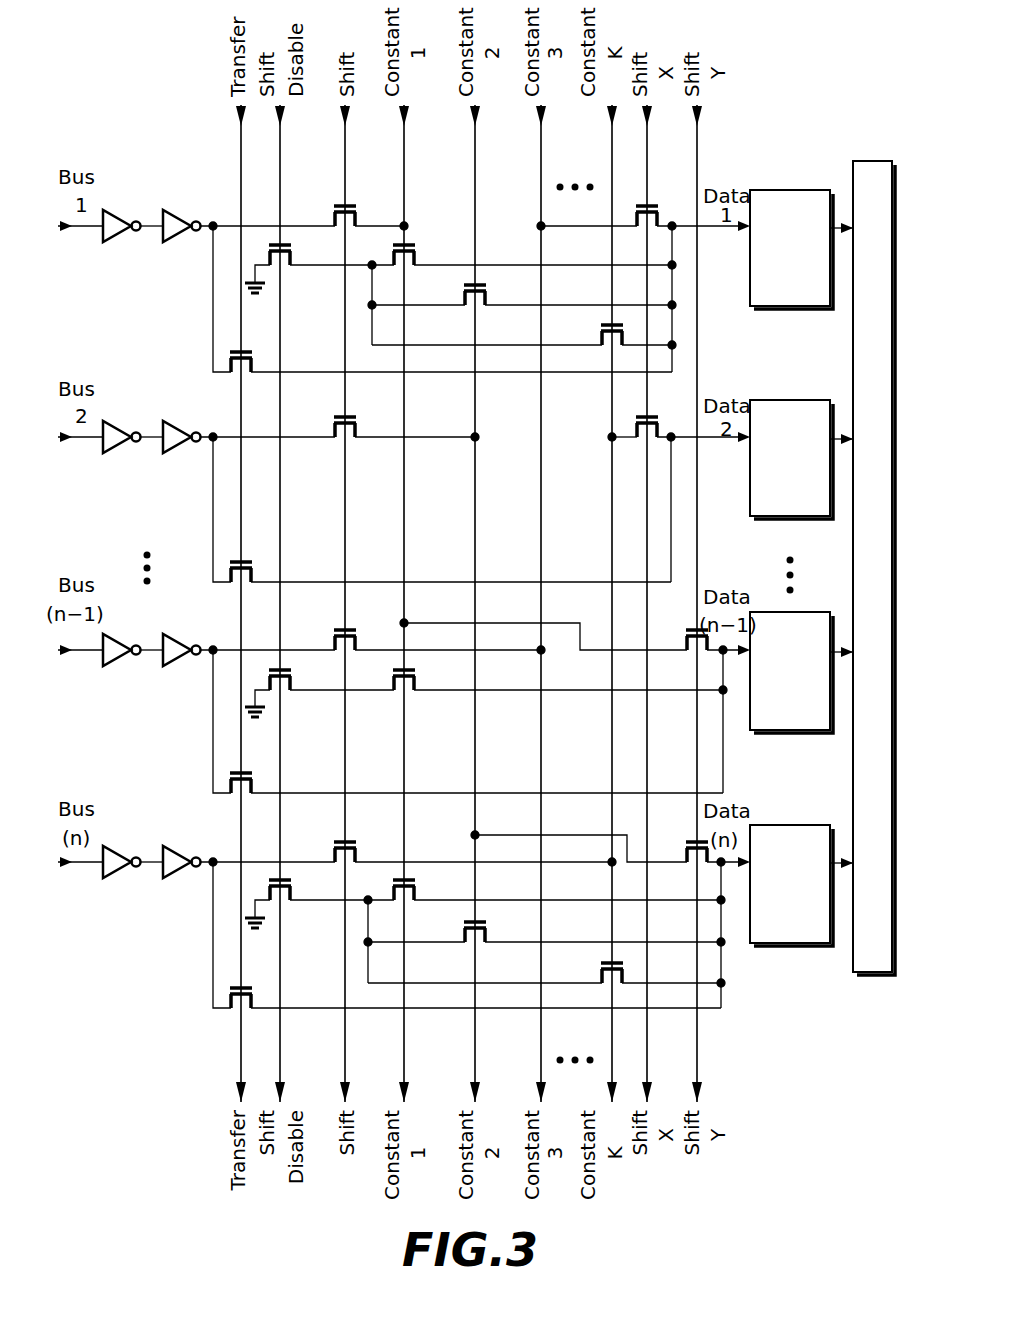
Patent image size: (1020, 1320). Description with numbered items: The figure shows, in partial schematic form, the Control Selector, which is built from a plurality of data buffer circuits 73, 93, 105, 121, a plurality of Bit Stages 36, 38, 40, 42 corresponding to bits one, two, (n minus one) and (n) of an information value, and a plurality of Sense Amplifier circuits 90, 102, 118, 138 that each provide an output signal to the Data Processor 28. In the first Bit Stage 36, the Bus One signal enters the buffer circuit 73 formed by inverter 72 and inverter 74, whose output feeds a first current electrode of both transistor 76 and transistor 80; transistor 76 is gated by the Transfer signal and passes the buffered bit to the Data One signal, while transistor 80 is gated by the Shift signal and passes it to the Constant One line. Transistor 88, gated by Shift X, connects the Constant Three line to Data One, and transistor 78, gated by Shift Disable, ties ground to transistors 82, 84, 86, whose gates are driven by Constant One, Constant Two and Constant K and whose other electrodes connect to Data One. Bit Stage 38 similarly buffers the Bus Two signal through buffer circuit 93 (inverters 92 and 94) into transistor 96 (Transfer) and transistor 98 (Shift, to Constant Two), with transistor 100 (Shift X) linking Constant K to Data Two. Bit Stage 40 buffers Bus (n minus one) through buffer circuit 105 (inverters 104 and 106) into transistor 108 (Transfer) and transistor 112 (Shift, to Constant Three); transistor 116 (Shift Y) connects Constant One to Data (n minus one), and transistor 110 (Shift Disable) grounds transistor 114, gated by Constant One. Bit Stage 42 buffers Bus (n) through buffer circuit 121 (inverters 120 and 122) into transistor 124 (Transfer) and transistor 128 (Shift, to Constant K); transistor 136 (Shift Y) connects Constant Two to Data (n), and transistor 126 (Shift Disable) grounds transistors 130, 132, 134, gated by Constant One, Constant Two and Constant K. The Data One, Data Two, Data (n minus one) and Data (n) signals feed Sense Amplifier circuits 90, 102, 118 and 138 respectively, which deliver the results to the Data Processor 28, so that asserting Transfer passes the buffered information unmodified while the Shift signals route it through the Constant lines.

The Data Processor 28 is at (860, 905).
The Bit Stage 36 is at (722, 320).
The Bit Stage 38 is at (722, 509).
The Bit Stage 40 is at (755, 749).
The Bit Stage 42 is at (755, 967).
The inverter 72 is at (124, 241).
The buffer circuit 73 is at (158, 294).
The inverter 74 is at (184, 241).
The transistor 76 is at (246, 352).
The transistor 78 is at (292, 246).
The transistor 80 is at (336, 203).
The transistor 82 is at (416, 248).
The transistor 84 is at (488, 287).
The transistor 86 is at (603, 327).
The transistor 88 is at (658, 207).
The Sense Amplifier circuit 90 is at (777, 293).
The inverter 92 is at (124, 452).
The buffer circuit 93 is at (150, 490).
The inverter 94 is at (184, 452).
The transistor 96 is at (246, 562).
The transistor 98 is at (336, 415).
The transistor 100 is at (657, 417).
The Sense Amplifier circuit 102 is at (772, 503).
The inverter 104 is at (124, 665).
The buffer circuit 105 is at (155, 714).
The inverter 106 is at (184, 665).
The transistor 108 is at (246, 773).
The transistor 110 is at (290, 671).
The transistor 112 is at (336, 627).
The transistor 114 is at (414, 672).
The transistor 116 is at (690, 630).
The Sense Amplifier circuit 118 is at (772, 715).
The inverter 120 is at (124, 877).
The buffer circuit 121 is at (155, 932).
The inverter 122 is at (184, 877).
The transistor 124 is at (246, 988).
The transistor 126 is at (290, 881).
The transistor 128 is at (336, 839).
The transistor 130 is at (414, 882).
The transistor 132 is at (487, 924).
The transistor 134 is at (603, 965).
The transistor 136 is at (690, 842).
The Sense Amplifier circuit 138 is at (772, 928).